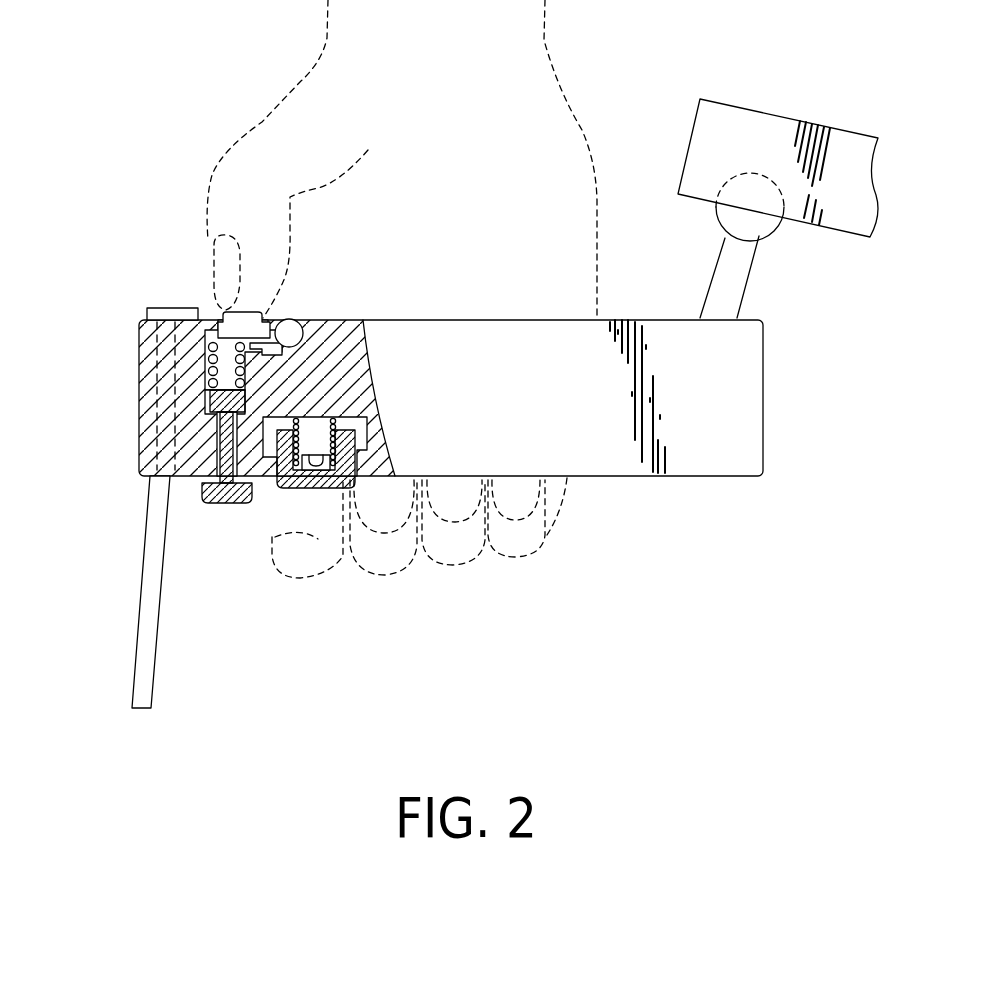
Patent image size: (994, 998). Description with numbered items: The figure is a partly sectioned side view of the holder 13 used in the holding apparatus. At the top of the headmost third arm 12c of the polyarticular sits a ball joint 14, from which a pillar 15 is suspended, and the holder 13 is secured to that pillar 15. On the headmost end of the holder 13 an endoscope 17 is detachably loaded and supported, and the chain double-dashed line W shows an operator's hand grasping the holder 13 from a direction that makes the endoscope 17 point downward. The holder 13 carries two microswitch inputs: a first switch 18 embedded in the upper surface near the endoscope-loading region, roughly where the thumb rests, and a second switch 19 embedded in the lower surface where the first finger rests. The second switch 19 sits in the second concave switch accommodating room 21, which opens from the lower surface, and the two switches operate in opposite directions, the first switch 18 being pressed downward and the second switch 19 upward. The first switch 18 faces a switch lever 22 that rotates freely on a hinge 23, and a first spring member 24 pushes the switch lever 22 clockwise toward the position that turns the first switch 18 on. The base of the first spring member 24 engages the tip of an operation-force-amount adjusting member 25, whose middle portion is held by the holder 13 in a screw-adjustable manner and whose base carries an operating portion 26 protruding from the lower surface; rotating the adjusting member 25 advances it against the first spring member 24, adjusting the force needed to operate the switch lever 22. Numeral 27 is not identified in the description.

The chain double-dashed line W is at (327, 35).
The third arm 12c is at (794, 121).
The holder 13 is at (677, 474).
The ball joint 14 is at (770, 232).
The pillar 15 is at (747, 295).
The endoscope 17 is at (144, 548).
The first switch 18 is at (263, 343).
The second switch 19 is at (320, 453).
The second concave switch accommodating room 21 is at (216, 320).
The switch lever 22 is at (247, 318).
The hinge 23 is at (293, 328).
The first spring member 24 is at (208, 382).
The operation-force-amount adjusting member 25 is at (215, 505).
The operating portion 26 is at (232, 509).
The bracket 27 is at (278, 489).